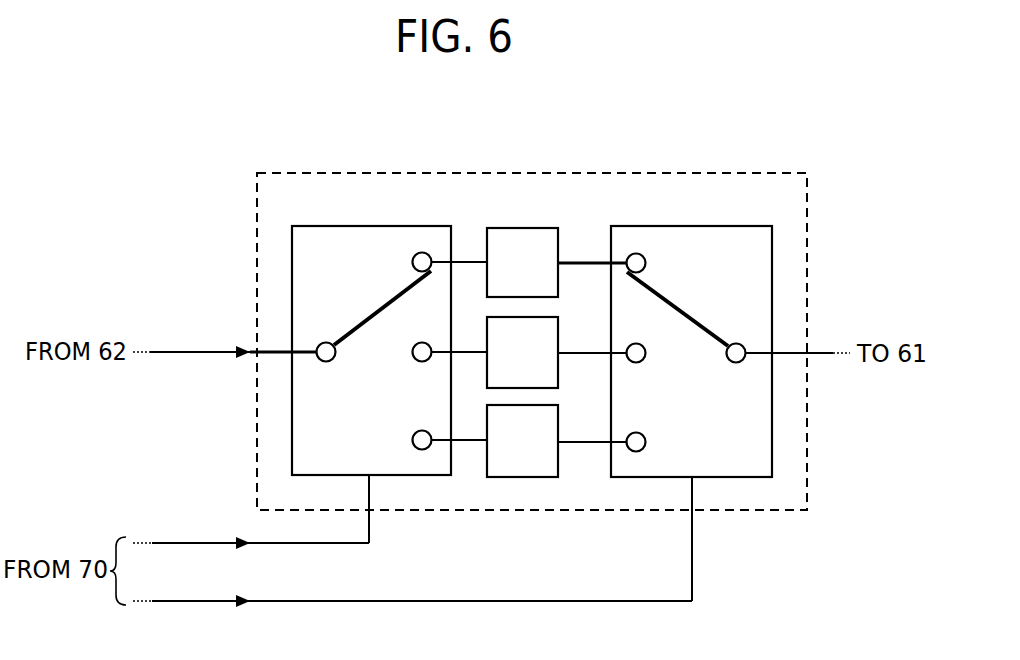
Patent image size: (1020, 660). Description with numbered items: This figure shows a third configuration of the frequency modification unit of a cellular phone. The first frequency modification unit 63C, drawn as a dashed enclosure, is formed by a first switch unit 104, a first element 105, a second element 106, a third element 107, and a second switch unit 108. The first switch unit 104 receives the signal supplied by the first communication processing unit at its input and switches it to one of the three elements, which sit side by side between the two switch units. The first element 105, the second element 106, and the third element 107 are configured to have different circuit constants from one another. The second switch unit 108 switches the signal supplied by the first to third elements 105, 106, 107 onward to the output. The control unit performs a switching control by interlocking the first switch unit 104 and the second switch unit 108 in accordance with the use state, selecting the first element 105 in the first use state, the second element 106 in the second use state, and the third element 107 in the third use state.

The first switch unit 104 is at (394, 205).
The first element 105 is at (552, 252).
The second element 106 is at (550, 341).
The third element 107 is at (550, 430).
The second switch unit 108 is at (656, 226).
The first frequency modification unit 63C is at (809, 264).